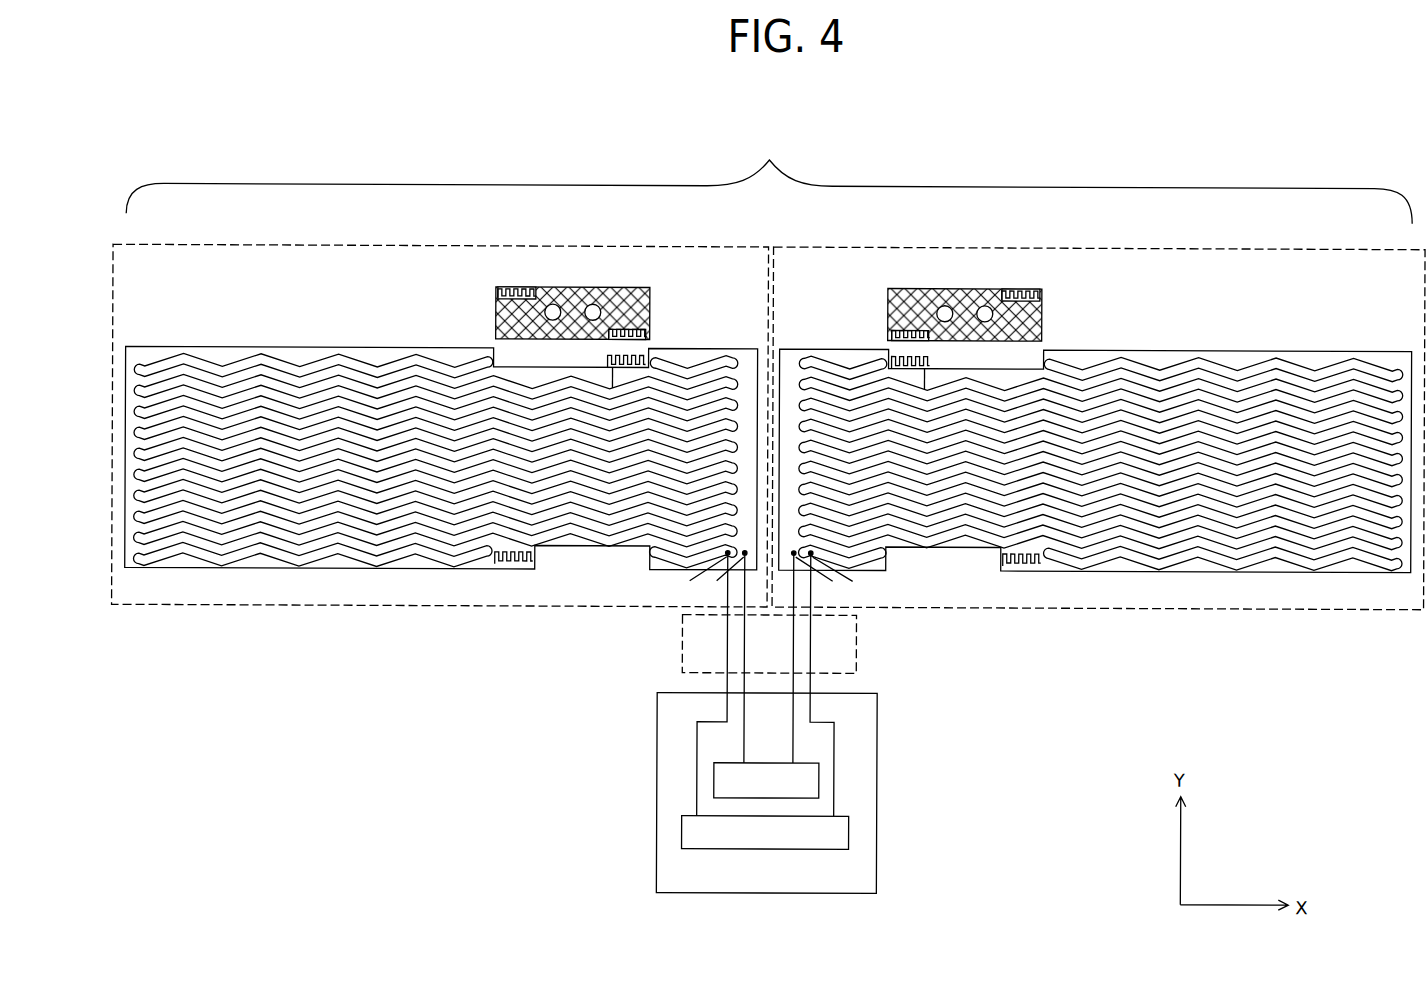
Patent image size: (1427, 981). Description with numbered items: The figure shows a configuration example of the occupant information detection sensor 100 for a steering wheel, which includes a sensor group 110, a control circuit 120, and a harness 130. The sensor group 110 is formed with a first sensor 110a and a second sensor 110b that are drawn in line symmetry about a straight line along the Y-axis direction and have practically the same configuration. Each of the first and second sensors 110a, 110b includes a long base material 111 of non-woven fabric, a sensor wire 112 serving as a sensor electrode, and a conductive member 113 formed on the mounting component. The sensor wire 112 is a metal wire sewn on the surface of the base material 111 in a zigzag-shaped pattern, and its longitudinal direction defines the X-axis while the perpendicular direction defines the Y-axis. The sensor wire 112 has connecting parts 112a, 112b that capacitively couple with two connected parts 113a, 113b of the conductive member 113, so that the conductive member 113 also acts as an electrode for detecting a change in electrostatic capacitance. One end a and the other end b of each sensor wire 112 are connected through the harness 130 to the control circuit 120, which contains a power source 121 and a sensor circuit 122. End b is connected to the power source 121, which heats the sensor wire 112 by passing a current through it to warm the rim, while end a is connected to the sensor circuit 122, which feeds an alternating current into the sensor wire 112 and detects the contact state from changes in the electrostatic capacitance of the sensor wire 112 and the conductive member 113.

The occupant information detection sensor 100 is at (368, 778).
The sensor group 110 is at (769, 174).
The first sensor 110a is at (414, 227).
The second sensor 110b is at (1170, 226).
The base material 111 is at (163, 347).
The sensor wire 112 is at (243, 354).
The connecting part 112a is at (607, 360).
The connecting part 112b is at (538, 562).
The conductive member 113 is at (580, 288).
The connected part 113a is at (648, 336).
The connected part 113b is at (496, 288).
The control circuit 120 is at (690, 895).
The power source 121 is at (821, 783).
The sensor circuit 122 is at (851, 835).
The harness 130 is at (857, 622).